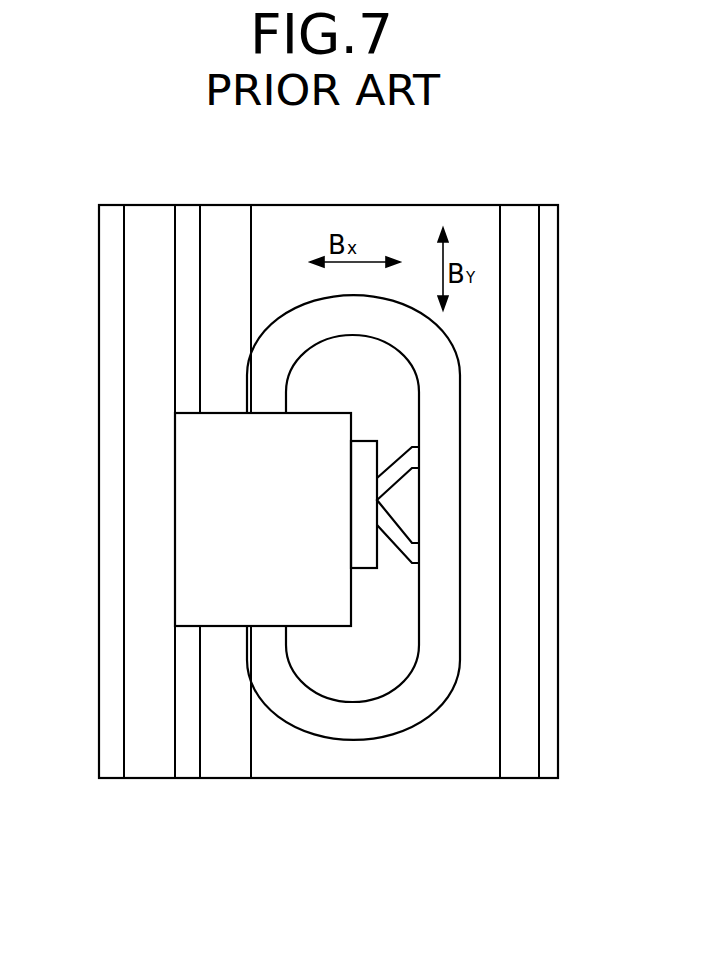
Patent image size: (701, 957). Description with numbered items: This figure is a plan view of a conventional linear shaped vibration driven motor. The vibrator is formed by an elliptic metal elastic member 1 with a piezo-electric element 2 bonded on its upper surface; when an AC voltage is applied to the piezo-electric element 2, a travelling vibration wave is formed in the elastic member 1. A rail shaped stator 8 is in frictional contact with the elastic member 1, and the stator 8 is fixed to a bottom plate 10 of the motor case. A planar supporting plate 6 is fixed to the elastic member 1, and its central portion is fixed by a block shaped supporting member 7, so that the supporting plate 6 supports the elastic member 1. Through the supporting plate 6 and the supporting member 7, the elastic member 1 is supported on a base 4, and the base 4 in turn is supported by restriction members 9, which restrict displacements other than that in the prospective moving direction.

The elastic member 1 is at (460, 399).
The piezo-electric element 2 is at (444, 452).
The base 4 is at (193, 473).
The supporting plate 6 is at (402, 537).
The supporting member 7 is at (362, 452).
The stator 8 is at (222, 760).
The restriction members 9 is at (516, 614).
The bottom plate 10 is at (550, 684).